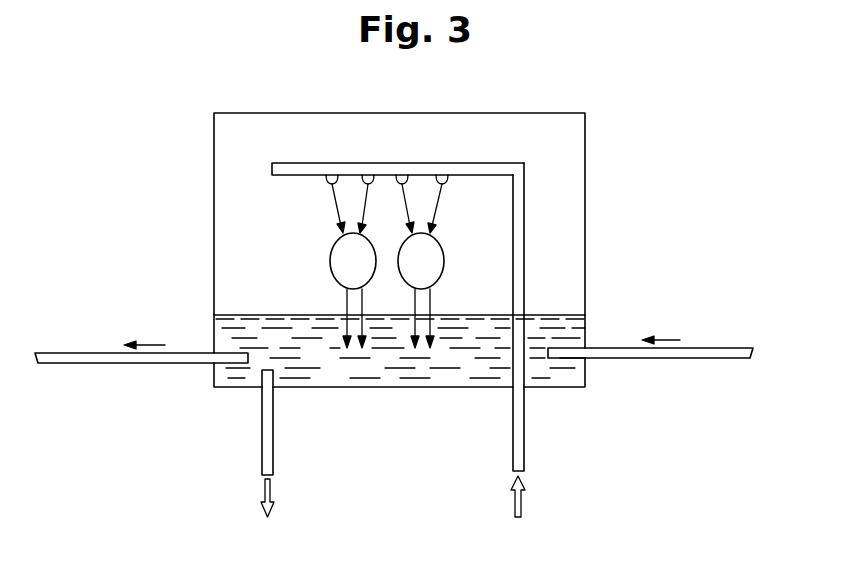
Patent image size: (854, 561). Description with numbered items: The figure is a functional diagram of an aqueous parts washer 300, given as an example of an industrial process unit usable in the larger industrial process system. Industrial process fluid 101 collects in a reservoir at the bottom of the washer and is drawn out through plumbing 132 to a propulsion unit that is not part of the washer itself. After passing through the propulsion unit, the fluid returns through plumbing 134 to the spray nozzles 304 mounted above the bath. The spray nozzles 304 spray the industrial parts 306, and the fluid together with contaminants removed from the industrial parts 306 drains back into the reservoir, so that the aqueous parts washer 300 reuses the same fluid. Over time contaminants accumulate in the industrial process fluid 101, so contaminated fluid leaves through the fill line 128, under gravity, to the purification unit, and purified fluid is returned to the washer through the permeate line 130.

The aqueous parts washer 300 is at (578, 74).
The spray nozzles 304 is at (356, 180).
The industrial parts 306 is at (330, 263).
The industrial process fluid 101 is at (242, 378).
The fill line 128 is at (103, 350).
The permeate line 130 is at (686, 359).
The plumbing 132 is at (275, 452).
The plumbing 134 is at (527, 447).